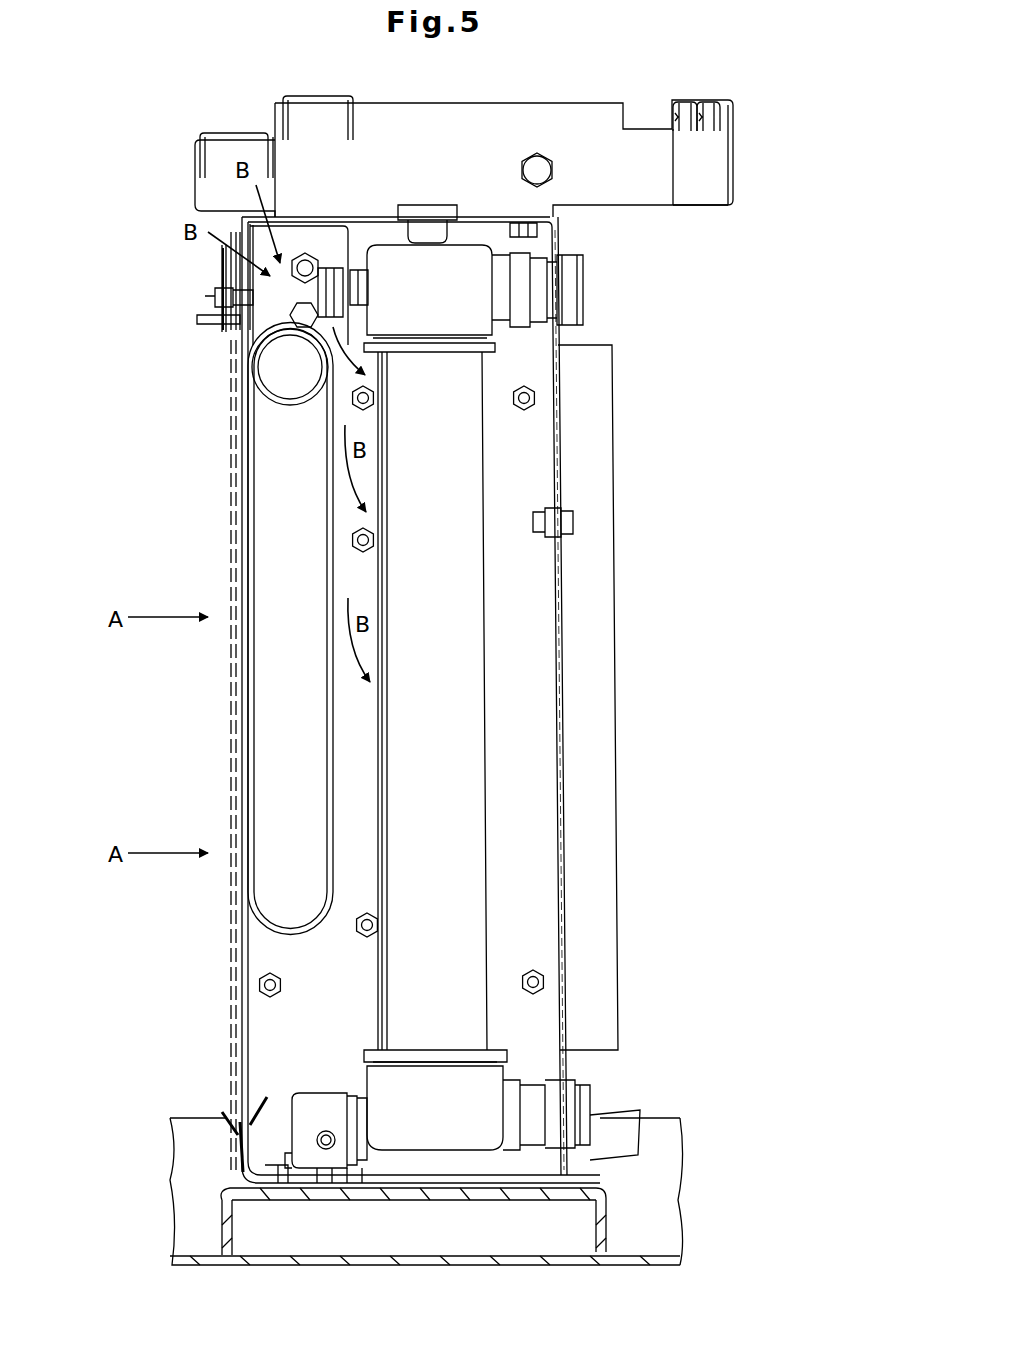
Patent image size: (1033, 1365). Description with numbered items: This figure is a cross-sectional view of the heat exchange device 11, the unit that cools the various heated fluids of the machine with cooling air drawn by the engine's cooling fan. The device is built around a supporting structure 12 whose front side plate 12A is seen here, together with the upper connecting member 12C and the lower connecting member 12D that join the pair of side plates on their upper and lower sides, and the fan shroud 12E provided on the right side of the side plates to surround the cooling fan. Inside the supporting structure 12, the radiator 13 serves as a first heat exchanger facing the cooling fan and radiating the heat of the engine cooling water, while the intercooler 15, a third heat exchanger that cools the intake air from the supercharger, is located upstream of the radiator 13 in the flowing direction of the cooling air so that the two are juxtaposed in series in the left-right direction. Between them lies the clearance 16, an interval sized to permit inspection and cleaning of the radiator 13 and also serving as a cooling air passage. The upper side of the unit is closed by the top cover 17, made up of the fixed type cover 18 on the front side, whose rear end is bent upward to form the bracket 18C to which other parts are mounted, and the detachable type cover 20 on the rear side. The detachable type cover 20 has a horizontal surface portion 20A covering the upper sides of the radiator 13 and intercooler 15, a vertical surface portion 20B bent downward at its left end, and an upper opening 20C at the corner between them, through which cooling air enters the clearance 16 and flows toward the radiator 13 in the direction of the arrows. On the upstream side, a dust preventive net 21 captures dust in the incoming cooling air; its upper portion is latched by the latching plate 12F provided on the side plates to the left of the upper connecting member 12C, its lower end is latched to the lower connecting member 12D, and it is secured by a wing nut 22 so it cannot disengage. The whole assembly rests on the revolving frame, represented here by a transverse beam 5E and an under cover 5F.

The transverse beam 5E is at (215, 1232).
The under cover 5F is at (635, 1258).
The heat exchange device 11 is at (208, 437).
The supporting structure 12 is at (560, 695).
The front side plate 12A is at (285, 1052).
The upper connecting member 12C is at (338, 240).
The lower connecting member 12D is at (333, 1190).
The fan shroud 12E is at (598, 780).
The latching plate 12F is at (220, 300).
The radiator 13 is at (458, 570).
The intercooler 15 is at (277, 560).
The clearance 16 is at (352, 730).
The top cover 17 is at (486, 205).
The fixed type cover 18 is at (577, 130).
The bracket 18C is at (694, 185).
The detachable type cover 20 is at (330, 217).
The horizontal surface portion 20A is at (387, 220).
The vertical surface portion 20B is at (228, 268).
The upper opening 20C is at (250, 222).
The dust preventive net 21 is at (228, 490).
The wing nut 22 is at (215, 330).